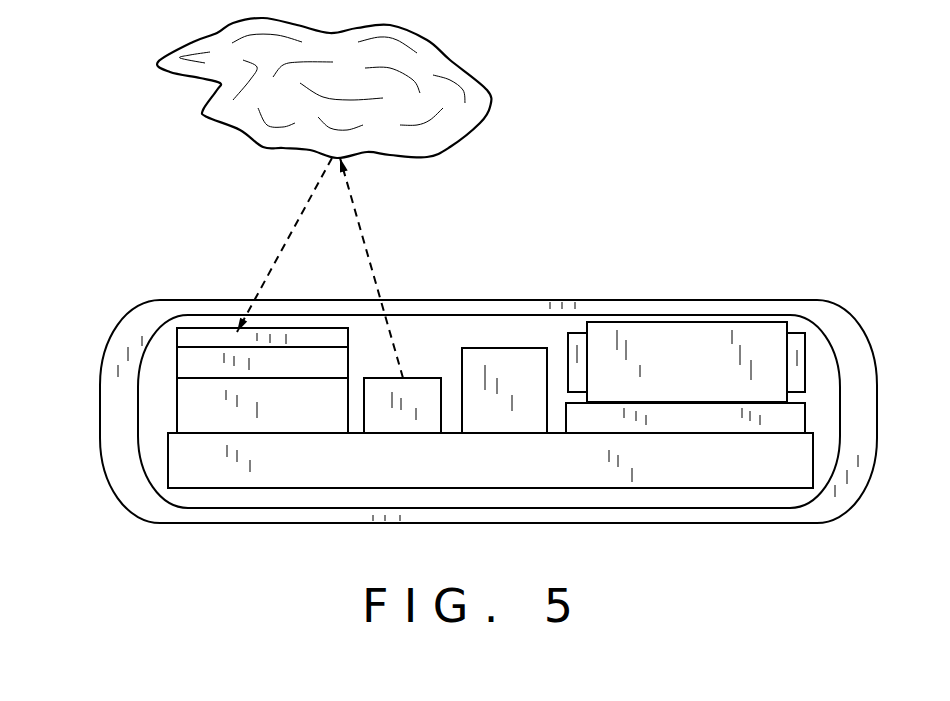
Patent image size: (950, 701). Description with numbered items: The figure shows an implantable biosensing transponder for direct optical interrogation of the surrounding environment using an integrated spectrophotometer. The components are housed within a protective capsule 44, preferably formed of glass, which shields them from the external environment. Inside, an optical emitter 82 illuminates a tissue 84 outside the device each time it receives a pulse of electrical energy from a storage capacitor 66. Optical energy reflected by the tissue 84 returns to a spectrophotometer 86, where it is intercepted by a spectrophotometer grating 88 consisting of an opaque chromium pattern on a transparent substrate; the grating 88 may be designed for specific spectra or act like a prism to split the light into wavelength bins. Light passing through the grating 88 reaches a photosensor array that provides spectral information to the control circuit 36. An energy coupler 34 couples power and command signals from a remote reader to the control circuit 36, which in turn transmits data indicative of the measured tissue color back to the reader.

The tissue 84 is at (480, 127).
The spectrophotometer grating 88 is at (177, 337).
The spectrophotometer 86 is at (150, 378).
The capsule 44 is at (103, 442).
The optical emitter 82 is at (413, 378).
The storage capacitor 66 is at (502, 348).
The energy coupler 34 is at (788, 327).
The control circuit 36 is at (807, 413).